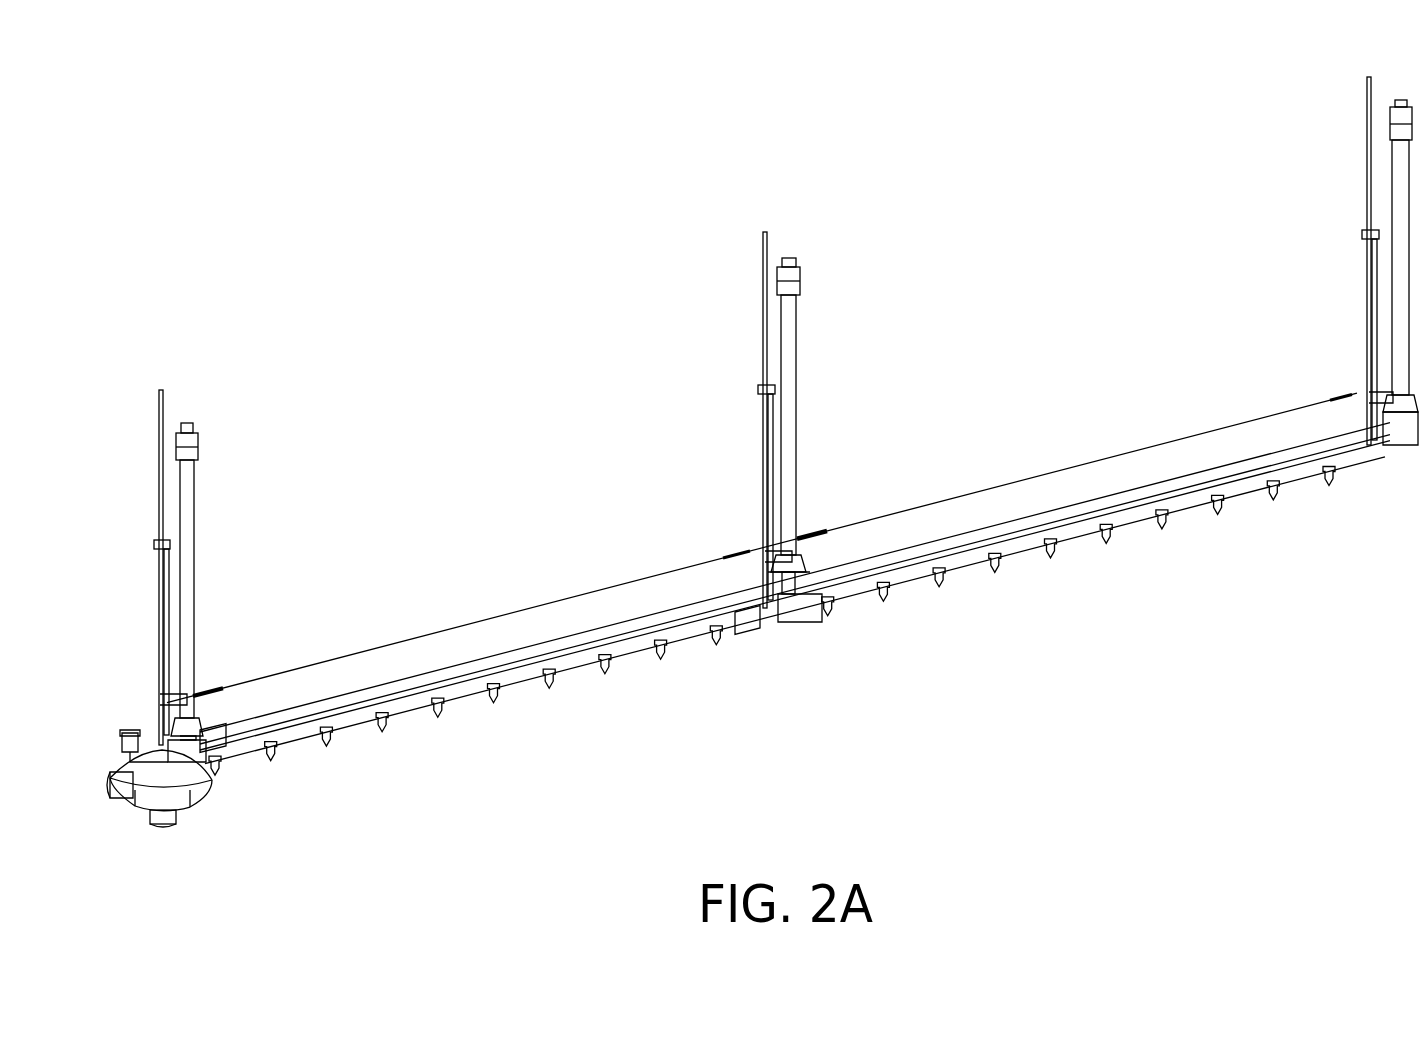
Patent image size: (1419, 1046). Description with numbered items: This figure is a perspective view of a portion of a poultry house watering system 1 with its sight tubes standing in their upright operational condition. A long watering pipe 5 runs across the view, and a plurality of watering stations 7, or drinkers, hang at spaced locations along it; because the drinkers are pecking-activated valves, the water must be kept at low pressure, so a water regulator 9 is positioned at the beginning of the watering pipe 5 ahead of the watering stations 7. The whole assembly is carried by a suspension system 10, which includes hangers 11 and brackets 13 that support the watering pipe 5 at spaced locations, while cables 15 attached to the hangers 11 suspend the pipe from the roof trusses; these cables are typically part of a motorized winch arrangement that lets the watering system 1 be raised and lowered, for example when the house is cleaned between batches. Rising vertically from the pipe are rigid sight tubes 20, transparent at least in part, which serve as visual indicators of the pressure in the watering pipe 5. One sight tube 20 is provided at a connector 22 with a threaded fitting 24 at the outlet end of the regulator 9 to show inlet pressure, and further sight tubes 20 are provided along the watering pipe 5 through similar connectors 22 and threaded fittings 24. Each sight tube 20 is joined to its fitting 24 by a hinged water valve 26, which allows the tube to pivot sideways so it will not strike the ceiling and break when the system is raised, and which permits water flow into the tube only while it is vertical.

The watering system 1 is at (977, 655).
The watering pipe 5 is at (574, 692).
The watering station 7 is at (443, 714).
The water regulator 9 is at (202, 797).
The suspension system 10 is at (712, 521).
The hanger 11 is at (762, 570).
The bracket 13 is at (757, 608).
The cable 15 is at (760, 318).
The sight tube 20 is at (194, 568).
The connector 22 is at (187, 772).
The threaded fitting 24 is at (200, 751).
The hinged water valve 26 is at (803, 538).